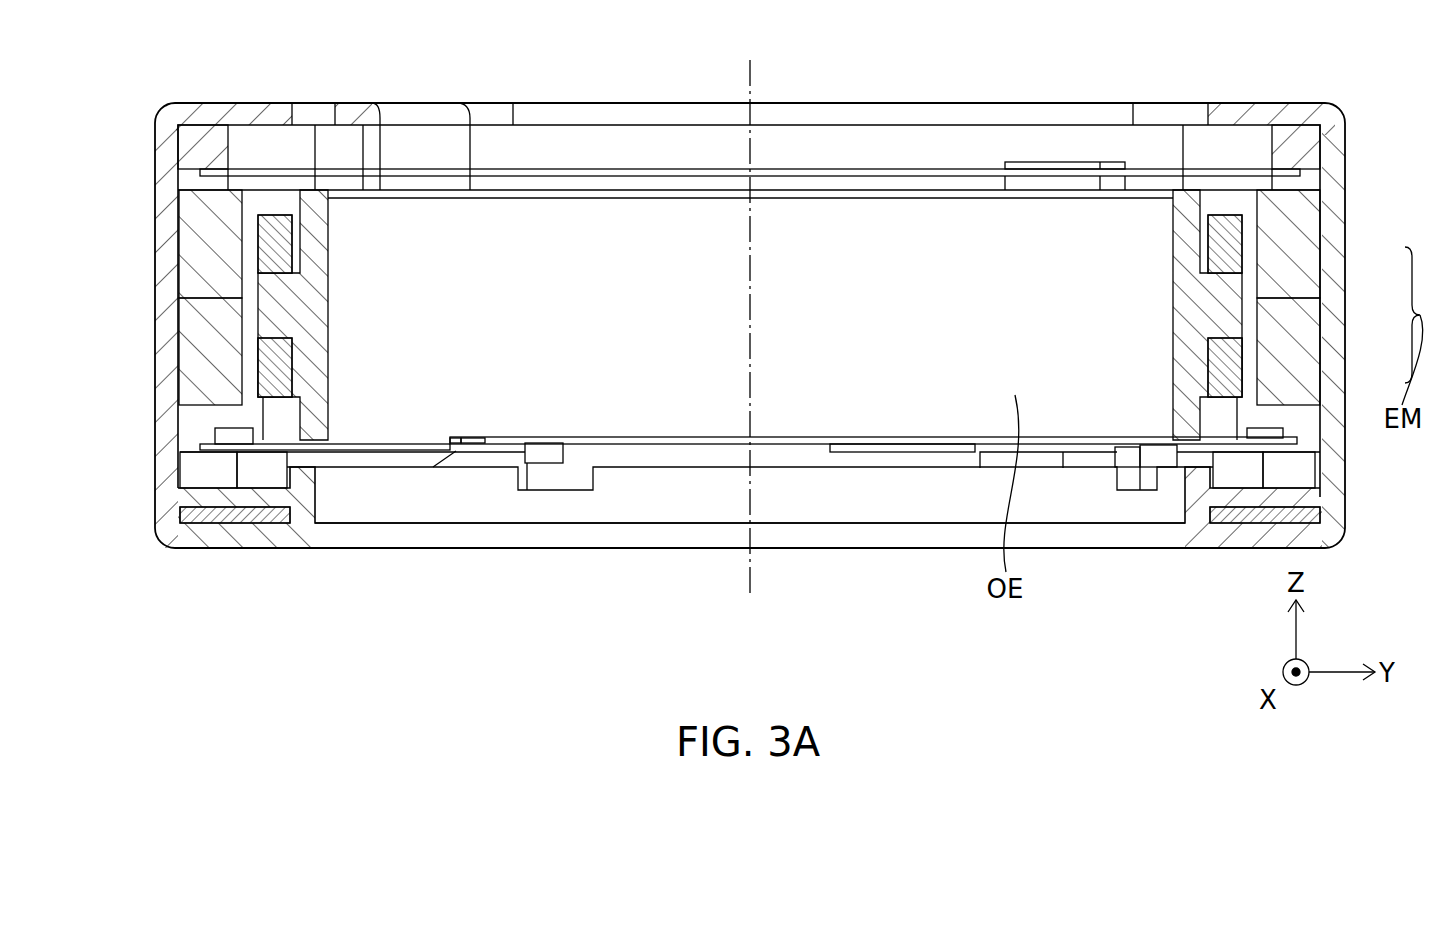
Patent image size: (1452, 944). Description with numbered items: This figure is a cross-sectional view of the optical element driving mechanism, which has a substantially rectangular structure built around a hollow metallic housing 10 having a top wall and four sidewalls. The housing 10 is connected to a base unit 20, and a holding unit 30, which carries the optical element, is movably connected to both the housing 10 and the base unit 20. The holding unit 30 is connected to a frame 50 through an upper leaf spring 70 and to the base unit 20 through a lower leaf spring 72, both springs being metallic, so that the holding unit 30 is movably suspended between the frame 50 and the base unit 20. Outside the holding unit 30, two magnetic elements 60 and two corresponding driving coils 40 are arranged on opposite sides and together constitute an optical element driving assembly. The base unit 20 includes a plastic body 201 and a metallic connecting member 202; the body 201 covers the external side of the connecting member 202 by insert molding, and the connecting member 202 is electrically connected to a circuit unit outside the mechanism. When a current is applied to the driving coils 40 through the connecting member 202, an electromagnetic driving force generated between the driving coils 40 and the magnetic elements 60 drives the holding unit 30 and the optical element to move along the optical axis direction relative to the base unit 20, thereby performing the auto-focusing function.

The housing 10 is at (165, 138).
The base unit 20 is at (188, 595).
The holding unit 30 is at (265, 327).
The driving coils 40 is at (262, 370).
The frame 50 is at (205, 140).
The magnetic elements 60 is at (200, 247).
The upper leaf spring 70 is at (185, 173).
The lower leaf spring 72 is at (185, 446).
The body 201 is at (180, 532).
The connecting member 202 is at (250, 525).